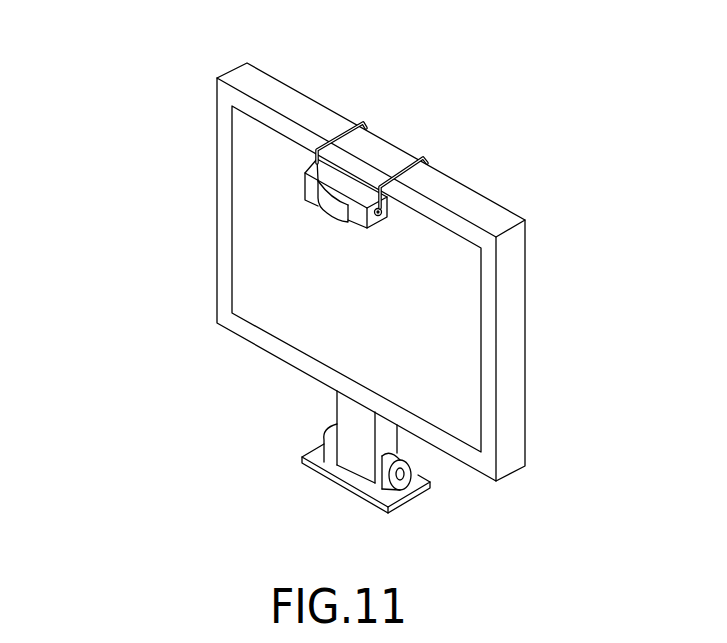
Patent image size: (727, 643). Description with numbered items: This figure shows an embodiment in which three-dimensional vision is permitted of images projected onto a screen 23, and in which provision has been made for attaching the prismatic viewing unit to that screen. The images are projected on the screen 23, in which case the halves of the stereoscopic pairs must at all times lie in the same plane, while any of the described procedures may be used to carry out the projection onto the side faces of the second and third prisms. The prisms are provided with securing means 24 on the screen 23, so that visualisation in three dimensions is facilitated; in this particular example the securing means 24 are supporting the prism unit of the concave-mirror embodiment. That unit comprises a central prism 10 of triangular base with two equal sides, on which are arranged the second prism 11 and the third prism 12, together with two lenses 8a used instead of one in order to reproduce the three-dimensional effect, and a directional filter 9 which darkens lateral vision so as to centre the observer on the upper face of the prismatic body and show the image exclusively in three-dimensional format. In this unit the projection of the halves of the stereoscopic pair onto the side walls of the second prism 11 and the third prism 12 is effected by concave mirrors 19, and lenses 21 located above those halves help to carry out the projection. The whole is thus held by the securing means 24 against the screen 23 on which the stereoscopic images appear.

The screen 23 is at (445, 352).
The securing means 24 is at (363, 124).
The concave mirrors 19 is at (217, 343).
The lenses 21 is at (217, 343).
The lenses 8a is at (198, 299).
The directional filter 9 is at (198, 299).
The central prism 10 is at (198, 299).
The second prism 11 is at (198, 299).
The third prism 12 is at (343, 242).